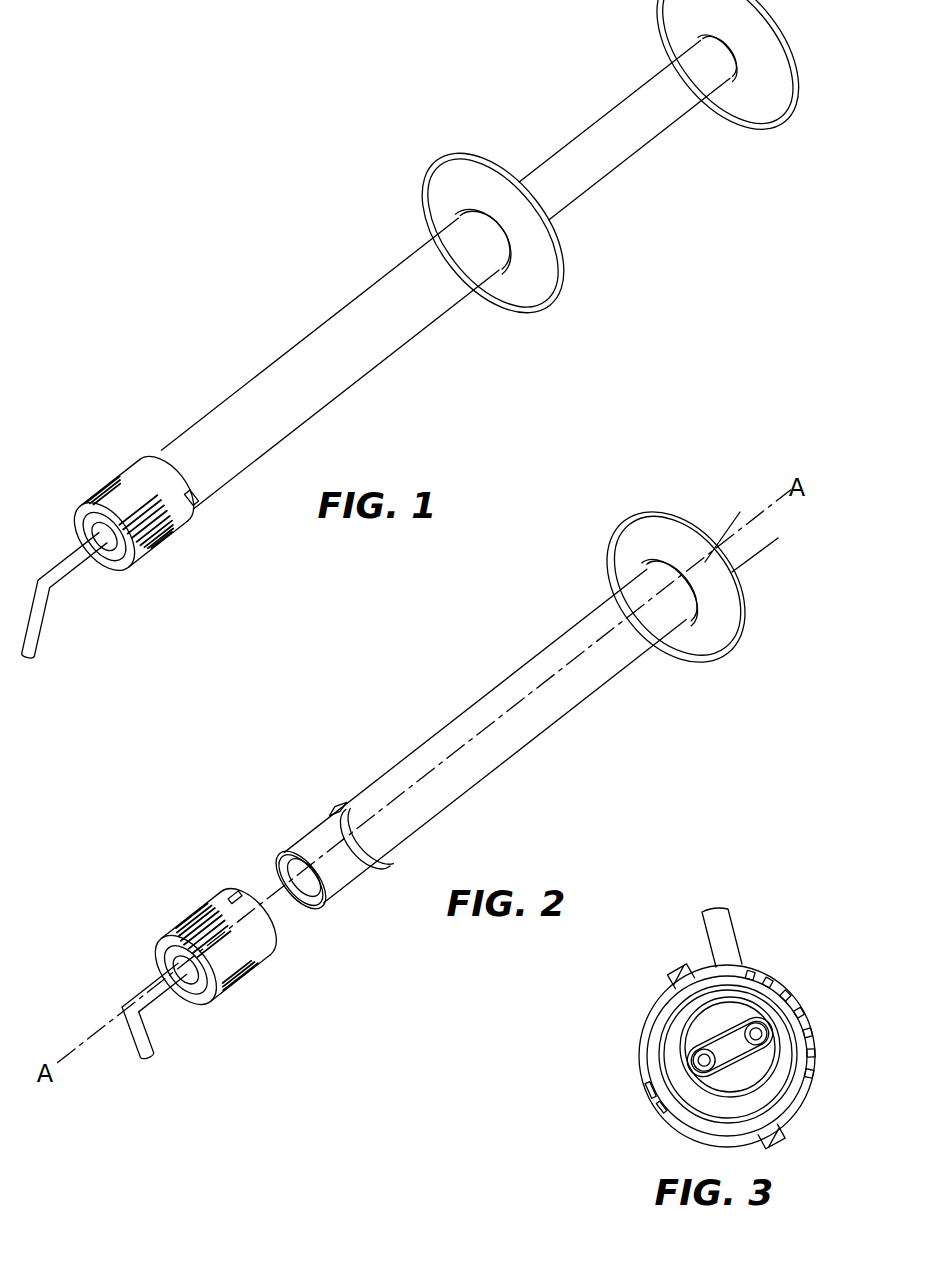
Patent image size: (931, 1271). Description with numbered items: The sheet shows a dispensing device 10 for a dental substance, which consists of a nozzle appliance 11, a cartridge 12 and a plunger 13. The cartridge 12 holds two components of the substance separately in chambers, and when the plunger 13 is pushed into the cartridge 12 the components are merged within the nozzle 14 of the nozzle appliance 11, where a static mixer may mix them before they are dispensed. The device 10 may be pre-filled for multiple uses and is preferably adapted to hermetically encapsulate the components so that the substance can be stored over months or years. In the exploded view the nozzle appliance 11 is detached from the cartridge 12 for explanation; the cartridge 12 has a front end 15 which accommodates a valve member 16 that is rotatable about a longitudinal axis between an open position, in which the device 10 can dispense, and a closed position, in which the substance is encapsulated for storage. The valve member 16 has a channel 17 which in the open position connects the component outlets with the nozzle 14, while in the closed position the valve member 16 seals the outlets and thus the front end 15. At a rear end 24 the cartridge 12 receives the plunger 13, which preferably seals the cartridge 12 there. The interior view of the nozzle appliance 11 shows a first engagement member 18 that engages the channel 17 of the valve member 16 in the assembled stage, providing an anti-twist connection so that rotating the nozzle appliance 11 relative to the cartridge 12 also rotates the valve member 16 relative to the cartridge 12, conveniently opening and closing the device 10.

In FIG. 1, the dispensing device 10 is at (229, 278).
In FIG. 2, the dispensing device 10 is at (390, 677).
In FIG. 1, the nozzle appliance 11 is at (190, 542).
In FIG. 2, the nozzle appliance 11 is at (268, 975).
In FIG. 3, the nozzle appliance 11 is at (632, 1108).
In FIG. 1, the cartridge 12 is at (218, 420).
In FIG. 2, the cartridge 12 is at (410, 768).
In FIG. 1, the plunger 13 is at (615, 140).
In FIG. 2, the plunger 13 is at (747, 547).
In FIG. 1, the nozzle 14 is at (68, 565).
In FIG. 2, the nozzle 14 is at (158, 1000).
In FIG. 2, the front end 15 is at (320, 838).
In FIG. 2, the valve member 16 is at (283, 877).
In FIG. 2, the channel 17 is at (300, 905).
In FIG. 3, the first engagement member 18 is at (733, 1043).
In FIG. 2, the rear end 24 is at (640, 593).